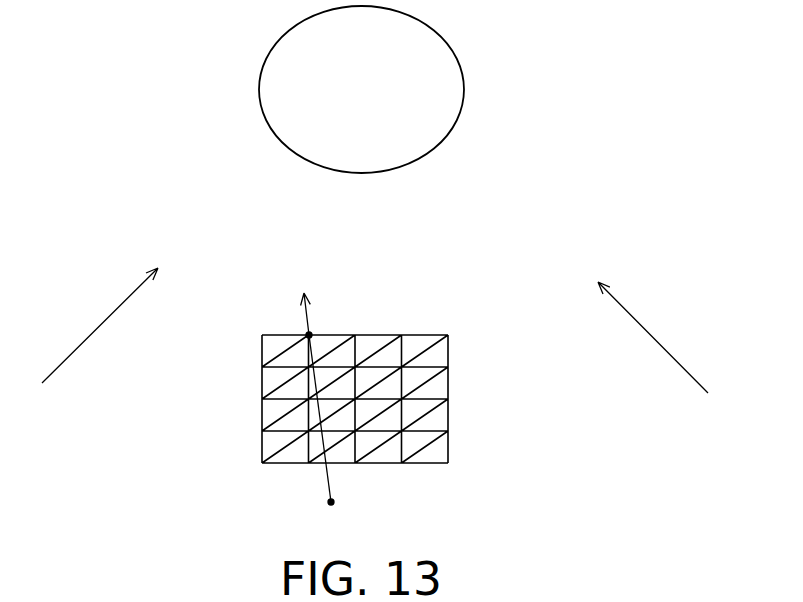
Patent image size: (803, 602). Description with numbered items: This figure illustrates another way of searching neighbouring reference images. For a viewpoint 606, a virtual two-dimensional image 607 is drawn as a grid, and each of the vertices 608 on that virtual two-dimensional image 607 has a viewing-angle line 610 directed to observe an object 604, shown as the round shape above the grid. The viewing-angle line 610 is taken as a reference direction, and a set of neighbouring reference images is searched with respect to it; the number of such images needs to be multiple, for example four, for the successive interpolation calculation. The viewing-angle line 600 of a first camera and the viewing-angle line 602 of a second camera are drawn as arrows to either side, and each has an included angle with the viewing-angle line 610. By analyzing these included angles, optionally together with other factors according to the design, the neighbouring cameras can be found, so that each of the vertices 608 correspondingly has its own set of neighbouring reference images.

The viewing-angle line of camera C1 600 is at (652, 335).
The viewing-angle line of camera C2 602 is at (100, 320).
The object 604 is at (464, 77).
The viewpoint 606 is at (331, 502).
The virtual 2-D image 607 is at (454, 311).
The vertices 608 is at (311, 334).
The viewing-angle line 610 is at (302, 316).